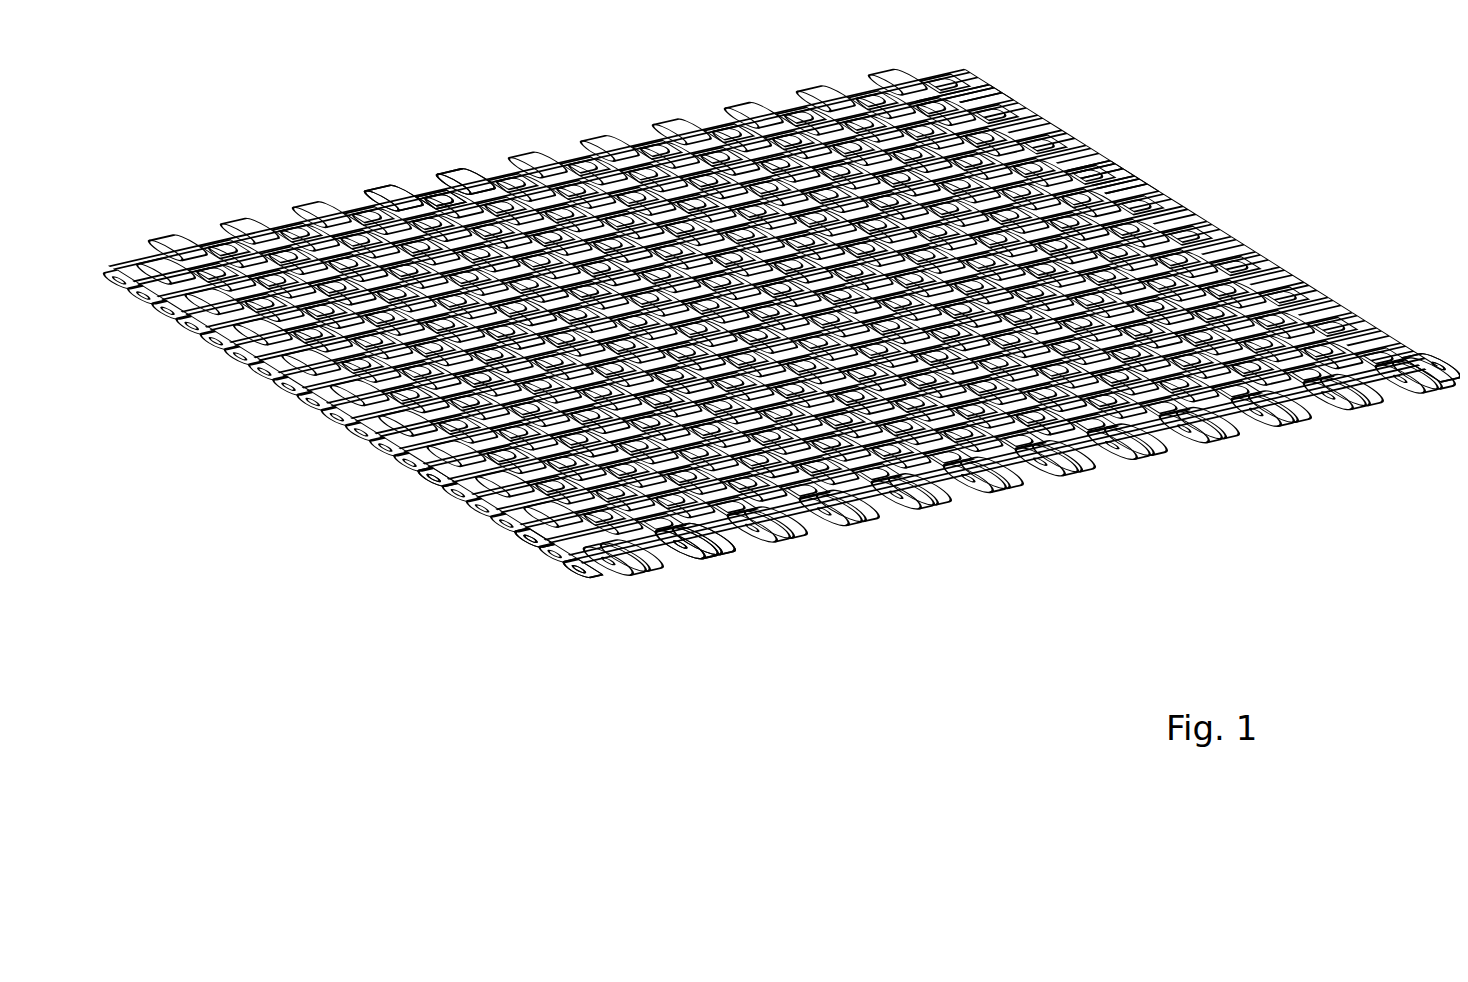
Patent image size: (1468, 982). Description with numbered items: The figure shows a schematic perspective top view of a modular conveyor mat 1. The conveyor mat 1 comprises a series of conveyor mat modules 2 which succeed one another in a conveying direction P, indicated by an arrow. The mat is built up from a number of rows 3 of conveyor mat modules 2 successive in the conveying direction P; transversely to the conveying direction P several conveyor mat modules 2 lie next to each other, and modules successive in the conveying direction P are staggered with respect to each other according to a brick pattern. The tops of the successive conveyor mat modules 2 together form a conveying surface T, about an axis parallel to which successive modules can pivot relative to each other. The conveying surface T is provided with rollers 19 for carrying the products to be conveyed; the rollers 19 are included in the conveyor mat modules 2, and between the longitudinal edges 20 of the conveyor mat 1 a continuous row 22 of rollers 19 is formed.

The modular conveyor mat 1 is at (240, 490).
The conveyor mat module 2 is at (495, 520).
The row 3 is at (1118, 150).
The roller 19 is at (457, 172).
The longitudinal edge 20 is at (380, 468).
The continuous row of rollers 22 is at (967, 90).
The conveying surface T is at (350, 200).
The conveying direction P is at (1343, 245).